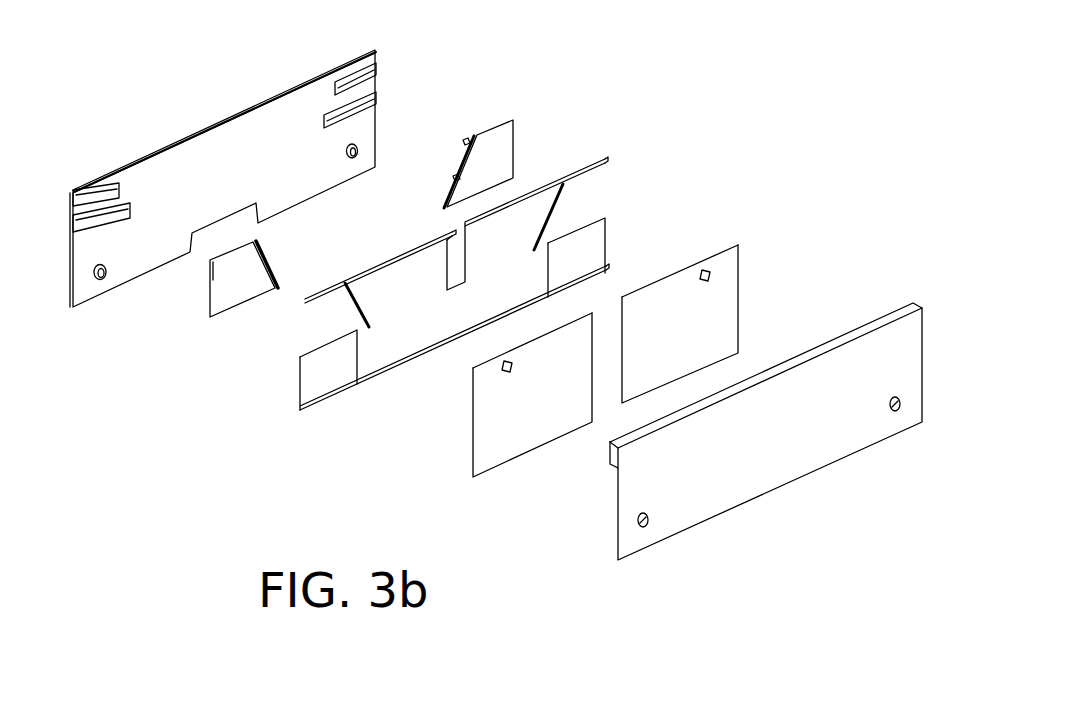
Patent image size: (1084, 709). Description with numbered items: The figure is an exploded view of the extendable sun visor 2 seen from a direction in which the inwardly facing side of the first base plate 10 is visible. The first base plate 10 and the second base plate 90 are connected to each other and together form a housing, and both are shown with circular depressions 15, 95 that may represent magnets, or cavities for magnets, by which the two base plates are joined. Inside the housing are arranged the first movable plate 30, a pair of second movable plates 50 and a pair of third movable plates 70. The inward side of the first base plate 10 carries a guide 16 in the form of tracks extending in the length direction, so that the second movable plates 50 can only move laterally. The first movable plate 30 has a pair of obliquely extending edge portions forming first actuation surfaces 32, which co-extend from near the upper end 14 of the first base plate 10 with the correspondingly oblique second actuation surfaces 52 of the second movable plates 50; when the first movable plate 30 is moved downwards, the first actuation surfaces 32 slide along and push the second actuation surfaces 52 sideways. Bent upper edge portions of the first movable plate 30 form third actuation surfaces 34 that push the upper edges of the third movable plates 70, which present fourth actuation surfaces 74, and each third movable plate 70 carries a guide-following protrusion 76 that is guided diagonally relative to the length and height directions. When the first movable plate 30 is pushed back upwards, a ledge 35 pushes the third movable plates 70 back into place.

The extendable sun visor 2 is at (742, 122).
The first base plate 10 is at (188, 185).
The upper end of the first base plate 14 is at (262, 103).
The circular depression 15 is at (357, 151).
The guide 16 is at (348, 110).
The first movable plate 30 is at (425, 356).
The first actuation surface 32 is at (352, 308).
The third actuation surface 34 is at (402, 258).
The ledge 35 is at (462, 311).
The second movable plate 50 is at (493, 158).
The second actuation surface 52 is at (455, 158).
The third movable plate 70 is at (697, 327).
The fourth actuation surface 74 is at (713, 254).
The guide-following protrusion 76 is at (715, 278).
The second base plate 90 is at (773, 457).
The circular depression 95 is at (898, 409).